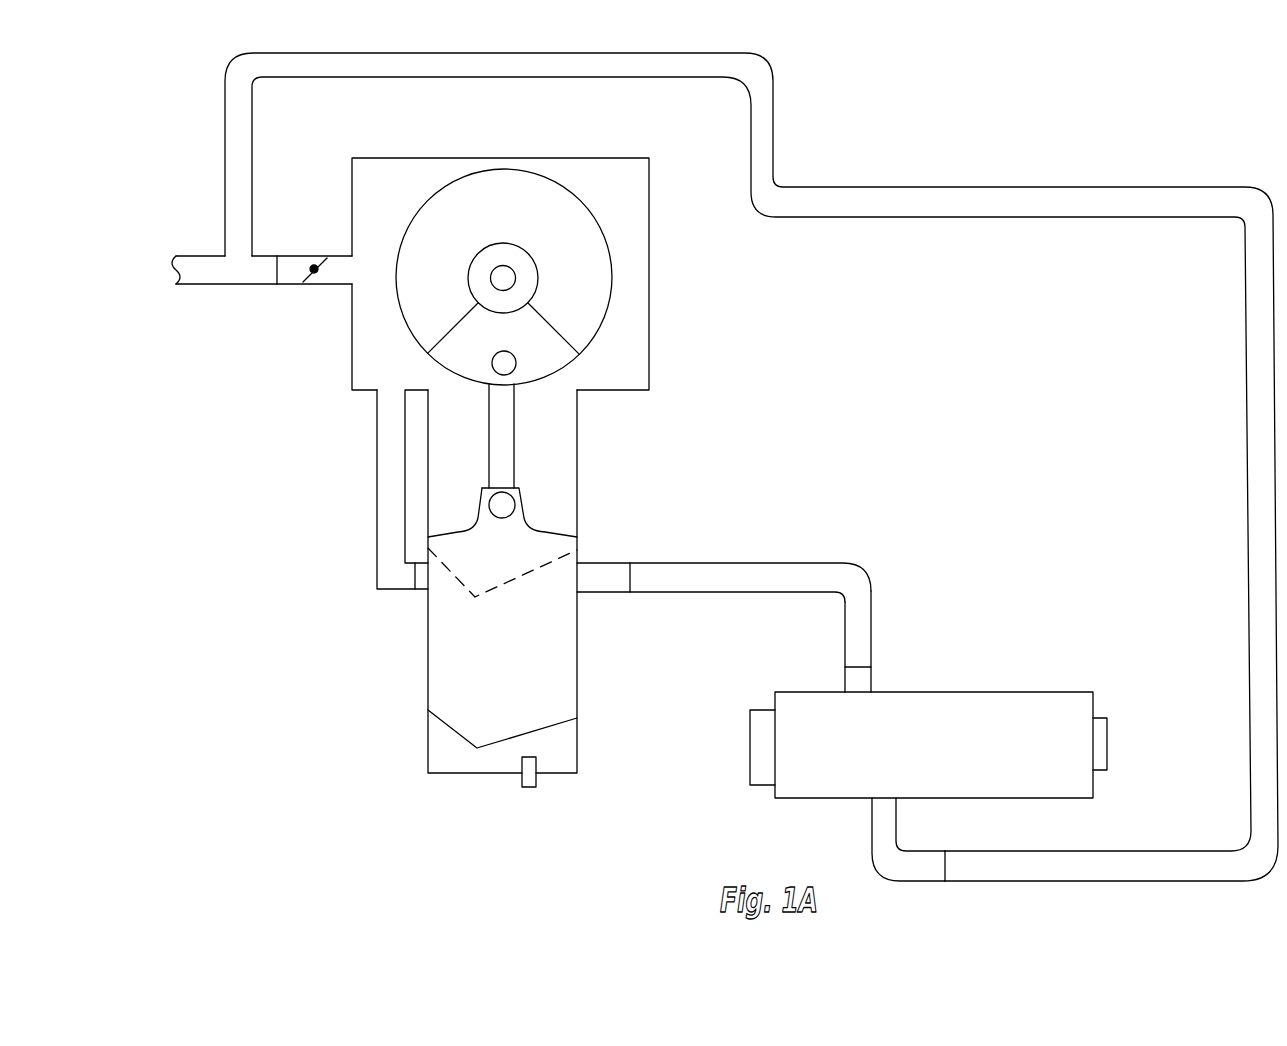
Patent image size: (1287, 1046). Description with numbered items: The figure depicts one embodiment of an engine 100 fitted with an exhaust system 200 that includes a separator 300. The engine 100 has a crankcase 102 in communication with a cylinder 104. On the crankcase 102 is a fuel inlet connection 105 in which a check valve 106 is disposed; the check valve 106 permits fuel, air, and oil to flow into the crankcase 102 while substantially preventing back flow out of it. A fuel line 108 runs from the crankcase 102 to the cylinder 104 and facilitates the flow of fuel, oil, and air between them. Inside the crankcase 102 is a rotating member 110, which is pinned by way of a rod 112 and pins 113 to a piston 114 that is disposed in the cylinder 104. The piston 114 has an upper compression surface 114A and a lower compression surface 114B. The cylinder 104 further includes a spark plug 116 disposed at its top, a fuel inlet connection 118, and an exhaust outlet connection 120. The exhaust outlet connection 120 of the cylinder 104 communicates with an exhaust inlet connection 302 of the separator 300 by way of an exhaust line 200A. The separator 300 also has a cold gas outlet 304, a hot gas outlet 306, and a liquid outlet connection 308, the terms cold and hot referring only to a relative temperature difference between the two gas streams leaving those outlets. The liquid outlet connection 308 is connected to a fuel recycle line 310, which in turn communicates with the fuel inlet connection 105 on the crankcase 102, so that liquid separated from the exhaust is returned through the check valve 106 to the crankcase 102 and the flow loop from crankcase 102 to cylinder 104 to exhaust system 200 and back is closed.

The engine 100 is at (1158, 153).
The crankcase 102 is at (638, 306).
The cylinder 104 is at (560, 447).
The fuel inlet connection 105 is at (333, 287).
The check valve 106 is at (314, 266).
The fuel line 108 is at (377, 502).
The rotating member 110 is at (567, 355).
The rod 112 is at (488, 440).
The pins 113 is at (507, 363).
The piston 114 is at (474, 618).
The upper compression surface 114A is at (458, 738).
The lower compression surface 114B is at (453, 532).
The spark plug 116 is at (528, 787).
The fuel inlet connection 118 is at (425, 590).
The exhaust outlet connection 120 is at (587, 562).
The exhaust system 200 is at (791, 576).
The exhaust line 200A is at (725, 563).
The separator 300 is at (932, 674).
The exhaust inlet connection 302 is at (872, 683).
The cold gas outlet 304 is at (748, 737).
The hot gas outlet 306 is at (1107, 747).
The liquid outlet connection 308 is at (870, 850).
The fuel recycle line 310 is at (1170, 217).